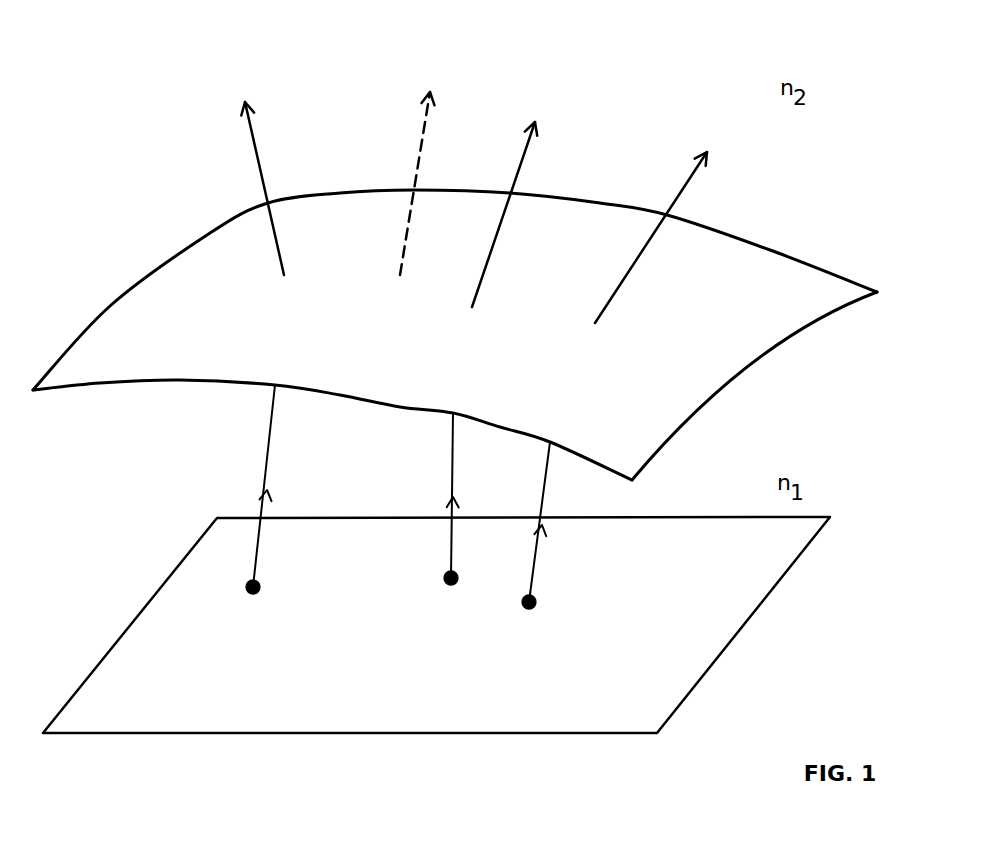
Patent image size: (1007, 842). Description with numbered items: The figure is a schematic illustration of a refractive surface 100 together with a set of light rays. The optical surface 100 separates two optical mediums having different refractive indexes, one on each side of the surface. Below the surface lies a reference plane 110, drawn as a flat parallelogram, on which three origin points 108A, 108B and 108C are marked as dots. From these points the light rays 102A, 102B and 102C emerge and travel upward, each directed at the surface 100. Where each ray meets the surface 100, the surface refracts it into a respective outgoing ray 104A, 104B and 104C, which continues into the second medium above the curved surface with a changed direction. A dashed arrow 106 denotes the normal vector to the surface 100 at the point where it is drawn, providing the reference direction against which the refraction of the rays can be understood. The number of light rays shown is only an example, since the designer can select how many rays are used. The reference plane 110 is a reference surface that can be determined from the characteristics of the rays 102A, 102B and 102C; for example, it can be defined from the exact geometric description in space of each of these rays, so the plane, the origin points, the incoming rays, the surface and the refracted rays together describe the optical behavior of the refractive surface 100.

The refractive surface 100 is at (725, 348).
The light ray 102A is at (553, 468).
The light ray 102B is at (453, 438).
The light ray 102C is at (273, 437).
The refracted ray 104A is at (680, 187).
The refracted ray 104B is at (525, 158).
The refracted ray 104C is at (258, 147).
The normal vector arrow 106 is at (420, 145).
The origin point 108A is at (527, 608).
The origin point 108B is at (447, 582).
The origin point 108C is at (265, 590).
The reference plane 110 is at (157, 590).